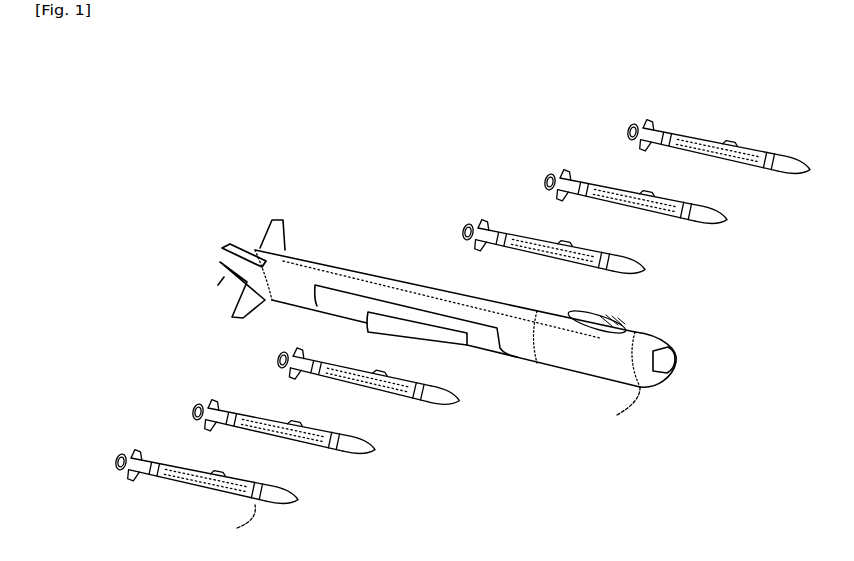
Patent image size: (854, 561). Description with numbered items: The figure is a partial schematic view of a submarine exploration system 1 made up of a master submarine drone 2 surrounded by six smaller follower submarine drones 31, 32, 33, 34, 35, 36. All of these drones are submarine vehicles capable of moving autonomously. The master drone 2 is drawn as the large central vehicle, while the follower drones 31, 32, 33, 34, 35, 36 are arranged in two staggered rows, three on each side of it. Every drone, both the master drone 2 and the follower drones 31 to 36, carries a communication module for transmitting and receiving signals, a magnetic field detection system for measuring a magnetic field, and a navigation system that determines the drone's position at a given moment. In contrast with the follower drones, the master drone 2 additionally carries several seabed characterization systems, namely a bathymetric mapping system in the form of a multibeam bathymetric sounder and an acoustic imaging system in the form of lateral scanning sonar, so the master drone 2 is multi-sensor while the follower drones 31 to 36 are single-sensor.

The submarine exploration system 1 is at (213, 190).
The master submarine drone 2 is at (306, 236).
The follower submarine drone 31 is at (97, 455).
The follower submarine drone 32 is at (182, 401).
The follower submarine drone 33 is at (264, 356).
The follower submarine drone 34 is at (470, 206).
The follower submarine drone 35 is at (553, 160).
The follower submarine drone 36 is at (632, 102).